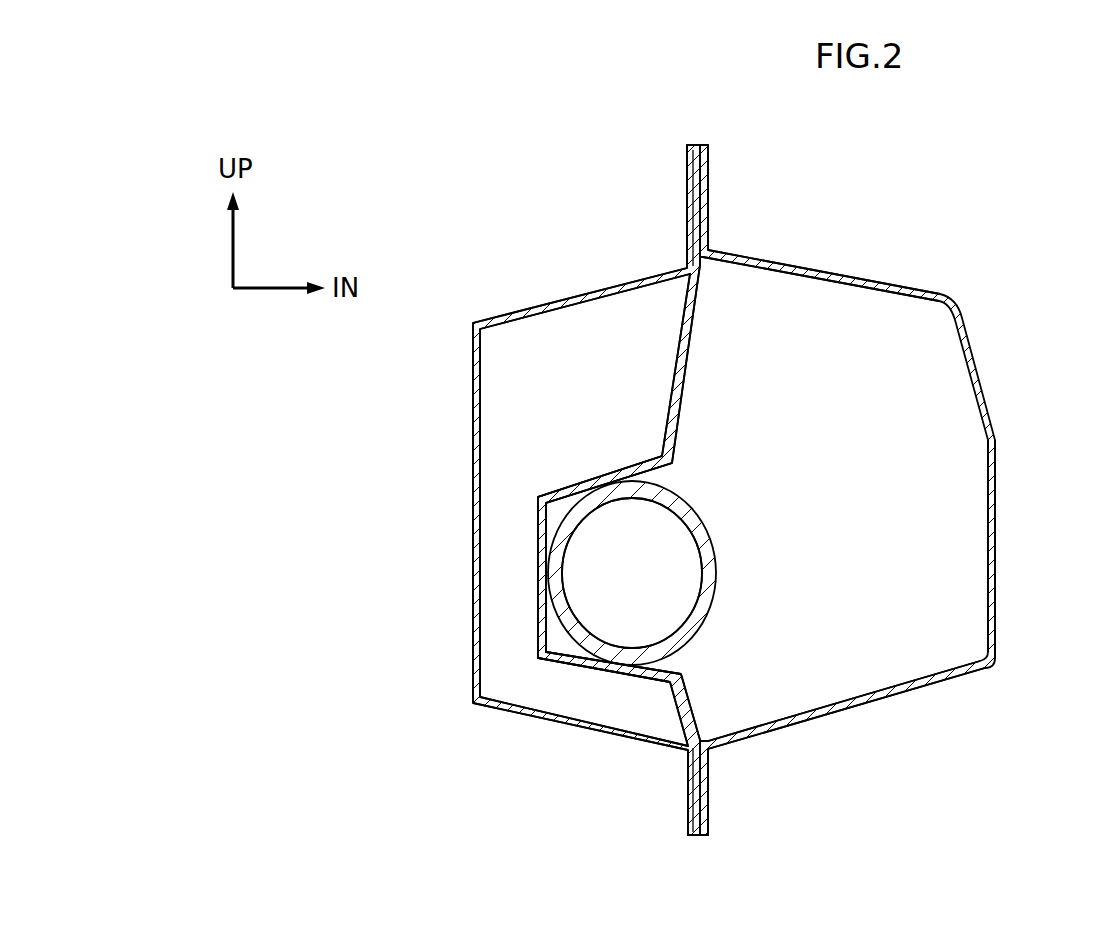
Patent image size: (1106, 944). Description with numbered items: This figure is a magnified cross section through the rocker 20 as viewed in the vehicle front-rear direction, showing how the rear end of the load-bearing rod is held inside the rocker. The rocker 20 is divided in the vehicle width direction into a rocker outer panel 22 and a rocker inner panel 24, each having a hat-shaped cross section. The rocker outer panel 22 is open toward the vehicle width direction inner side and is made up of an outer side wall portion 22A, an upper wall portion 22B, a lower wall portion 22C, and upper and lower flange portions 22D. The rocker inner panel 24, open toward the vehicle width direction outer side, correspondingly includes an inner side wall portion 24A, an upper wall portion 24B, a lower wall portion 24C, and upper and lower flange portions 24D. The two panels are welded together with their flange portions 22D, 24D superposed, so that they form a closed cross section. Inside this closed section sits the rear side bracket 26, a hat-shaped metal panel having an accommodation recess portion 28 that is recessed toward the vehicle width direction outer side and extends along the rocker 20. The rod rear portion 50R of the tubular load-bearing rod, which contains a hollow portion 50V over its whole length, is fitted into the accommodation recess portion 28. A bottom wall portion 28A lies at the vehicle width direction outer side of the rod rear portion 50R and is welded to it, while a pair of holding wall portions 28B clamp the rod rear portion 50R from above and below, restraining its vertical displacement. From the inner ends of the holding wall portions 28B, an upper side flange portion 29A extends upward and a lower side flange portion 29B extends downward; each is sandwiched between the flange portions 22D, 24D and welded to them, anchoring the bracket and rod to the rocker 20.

The rocker 20 is at (935, 163).
The rocker outer panel 22 is at (471, 440).
The outer side wall portion 22A is at (476, 503).
The upper wall portion 22B is at (552, 303).
The lower wall portion 22C is at (531, 716).
The flange portions 22D is at (690, 205).
The rocker inner panel 24 is at (981, 384).
The inner side wall portion 24A is at (996, 492).
The upper wall portion 24B is at (871, 281).
The lower wall portion 24C is at (864, 705).
The flange portions 24D is at (704, 200).
The rear side bracket 26 is at (686, 384).
The accommodation recess portion 28 is at (563, 491).
The bottom wall portion 28A is at (545, 580).
The holding wall portions 28B is at (600, 479).
The upper side flange portion 29A is at (697, 160).
The lower side flange portion 29B is at (696, 822).
The rod rear portion 50R is at (713, 543).
The hollow portion 50V is at (673, 613).